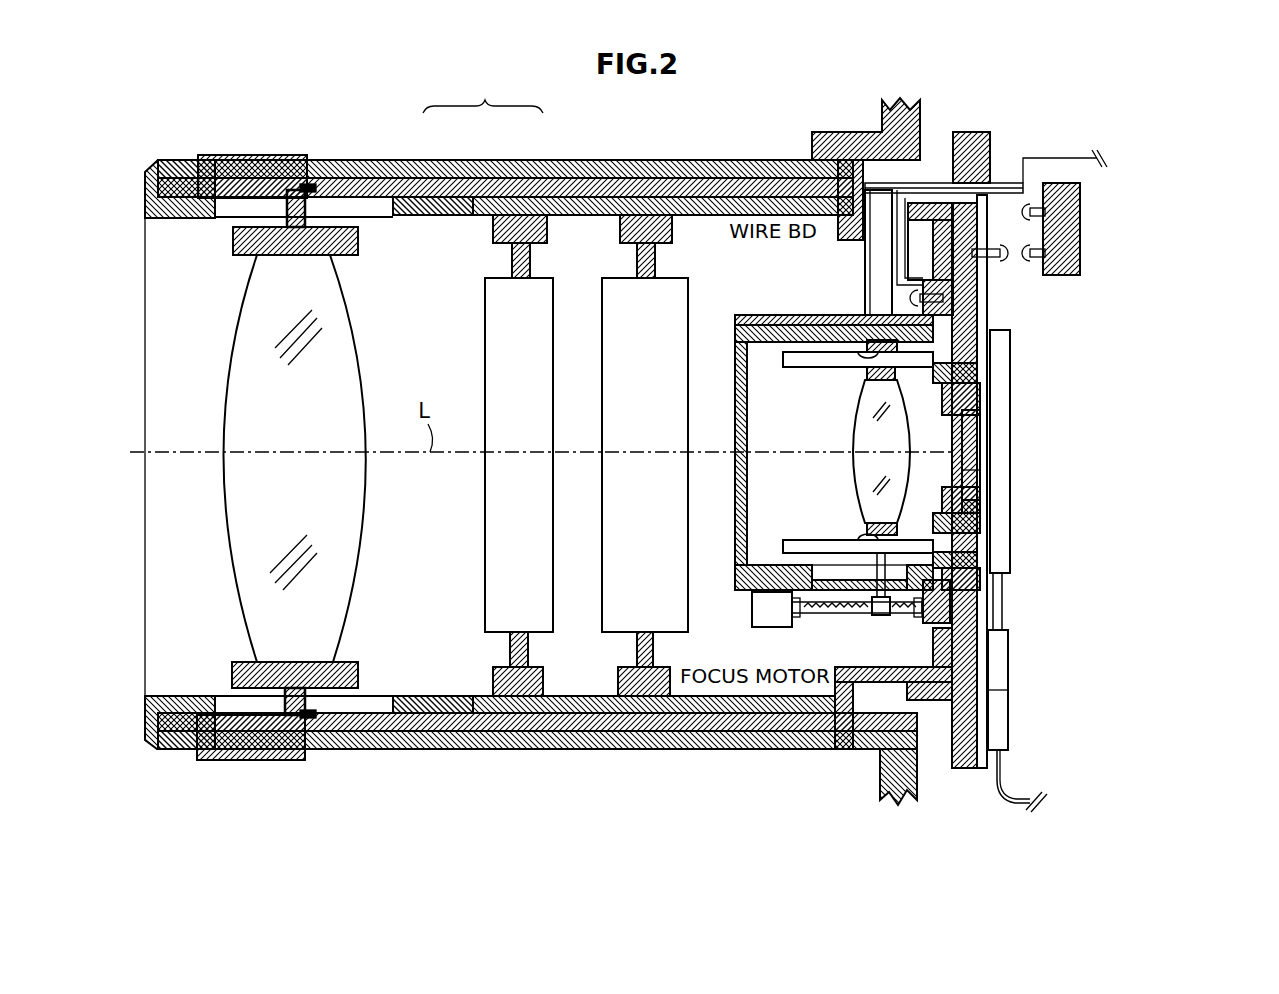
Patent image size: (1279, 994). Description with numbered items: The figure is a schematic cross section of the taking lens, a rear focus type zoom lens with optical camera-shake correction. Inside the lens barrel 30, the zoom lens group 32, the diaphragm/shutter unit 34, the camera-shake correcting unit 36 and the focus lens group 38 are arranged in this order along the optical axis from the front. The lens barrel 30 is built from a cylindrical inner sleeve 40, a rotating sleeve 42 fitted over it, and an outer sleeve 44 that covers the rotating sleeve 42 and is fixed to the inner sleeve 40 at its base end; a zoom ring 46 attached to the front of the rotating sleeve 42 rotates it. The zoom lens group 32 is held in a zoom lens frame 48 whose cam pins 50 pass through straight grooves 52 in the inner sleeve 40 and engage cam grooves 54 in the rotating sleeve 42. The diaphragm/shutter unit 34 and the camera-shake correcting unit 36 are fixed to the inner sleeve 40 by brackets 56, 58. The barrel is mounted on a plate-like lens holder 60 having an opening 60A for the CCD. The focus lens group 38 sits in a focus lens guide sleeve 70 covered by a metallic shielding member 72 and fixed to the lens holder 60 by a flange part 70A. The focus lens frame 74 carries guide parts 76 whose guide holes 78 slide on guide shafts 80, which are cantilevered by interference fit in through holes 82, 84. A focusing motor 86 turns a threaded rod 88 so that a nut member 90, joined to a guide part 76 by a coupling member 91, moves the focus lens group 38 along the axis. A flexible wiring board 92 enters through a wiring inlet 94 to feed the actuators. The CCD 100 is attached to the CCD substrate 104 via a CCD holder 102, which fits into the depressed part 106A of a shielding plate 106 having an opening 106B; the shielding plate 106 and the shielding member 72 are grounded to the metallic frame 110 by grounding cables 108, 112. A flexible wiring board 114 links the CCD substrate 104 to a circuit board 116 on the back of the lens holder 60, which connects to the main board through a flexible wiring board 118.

The lens barrel 30 is at (483, 98).
The zoom lens group 32 is at (256, 300).
The diaphragm/shutter unit 34 is at (485, 300).
The camera-shake correcting unit 36 is at (602, 300).
The focus lens group 38 is at (862, 426).
The inner sleeve 40 is at (525, 205).
The rotating sleeve 42 is at (486, 180).
The outer sleeve 44 is at (450, 162).
The zoom ring 46 is at (250, 155).
The zoom lens frame 48 is at (234, 241).
The cam pin 50 is at (320, 180).
The straight groove 52 is at (388, 217).
The cam groove 54 is at (289, 190).
The bracket 56 is at (512, 258).
The bracket 58 is at (640, 258).
The lens holder 60 is at (970, 132).
The opening 60A is at (985, 521).
The focus lens guide sleeve 70 is at (197, 113).
The flange part 70A is at (986, 310).
The shielding member 72 is at (797, 315).
The focus lens frame 74 is at (867, 378).
The guide part 76 is at (880, 340).
The guide hole 78 is at (866, 350).
The guide shaft 80 is at (808, 365).
The through hole 82 is at (990, 356).
The through hole 84 is at (995, 386).
The focusing motor 86 is at (772, 627).
The threaded rod 88 is at (816, 614).
The nut member 90 is at (881, 615).
The coupling member 91 is at (876, 588).
The flexible wiring board 92 is at (877, 254).
The wiring inlet 94 is at (850, 160).
The CCD 100 is at (975, 432).
The CCD holder 102 is at (985, 512).
The CCD substrate 104 is at (1010, 336).
The shielding plate 106 is at (1008, 656).
The depressed part 106A is at (978, 505).
The opening 106B is at (965, 490).
The grounding cable 108 is at (1017, 237).
The metallic frame 110 is at (1082, 230).
The grounding cable 112 is at (1014, 183).
The flexible wiring board 114 is at (1002, 608).
The circuit board 116 is at (1008, 705).
The flexible wiring board 118 is at (1010, 786).